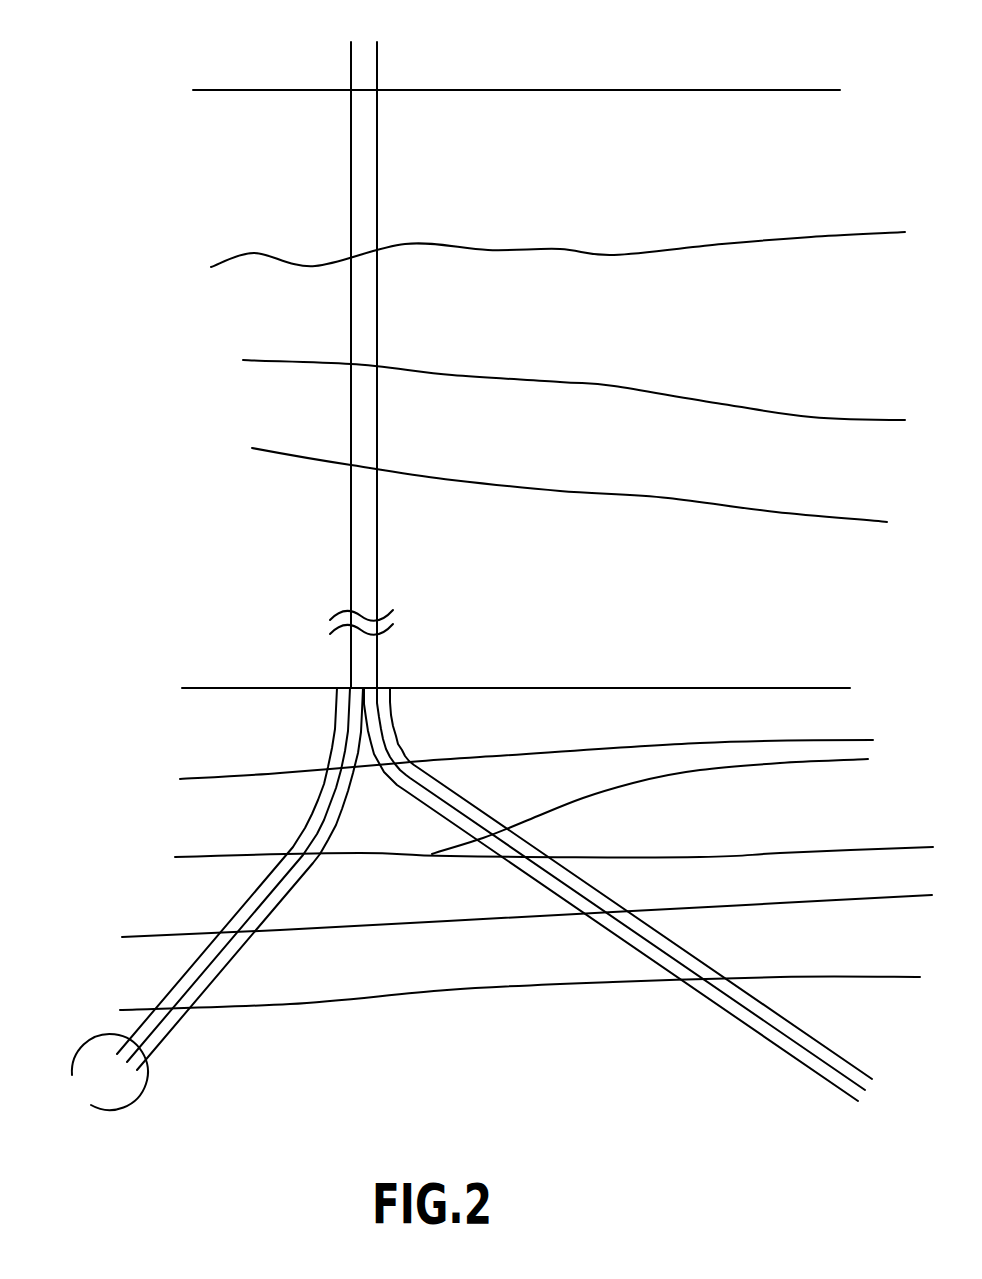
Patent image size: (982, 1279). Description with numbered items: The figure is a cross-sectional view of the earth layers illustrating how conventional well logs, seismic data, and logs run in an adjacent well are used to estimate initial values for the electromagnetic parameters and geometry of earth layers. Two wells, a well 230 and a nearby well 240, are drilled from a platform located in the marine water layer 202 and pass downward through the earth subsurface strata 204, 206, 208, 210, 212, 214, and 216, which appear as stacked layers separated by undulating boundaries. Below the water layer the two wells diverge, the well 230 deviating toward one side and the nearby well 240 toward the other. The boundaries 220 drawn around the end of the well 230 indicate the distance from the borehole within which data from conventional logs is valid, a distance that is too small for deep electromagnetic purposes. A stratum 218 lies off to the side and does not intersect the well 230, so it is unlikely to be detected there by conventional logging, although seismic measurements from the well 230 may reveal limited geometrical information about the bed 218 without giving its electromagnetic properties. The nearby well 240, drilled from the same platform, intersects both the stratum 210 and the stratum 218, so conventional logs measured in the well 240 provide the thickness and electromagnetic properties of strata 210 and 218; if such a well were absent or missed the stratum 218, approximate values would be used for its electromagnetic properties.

The marine water layer 202 is at (290, 160).
The earth subsurface stratum 204 is at (296, 338).
The earth subsurface stratum 206 is at (314, 425).
The earth subsurface stratum 208 is at (225, 760).
The earth subsurface stratum 210 is at (241, 830).
The earth subsurface stratum 212 is at (210, 907).
The earth subsurface stratum 214 is at (161, 987).
The earth subsurface stratum 216 is at (245, 1091).
The stratum 218 is at (846, 822).
The boundaries 220 is at (91, 1105).
The well 230 is at (348, 70).
The nearby well 240 is at (377, 62).